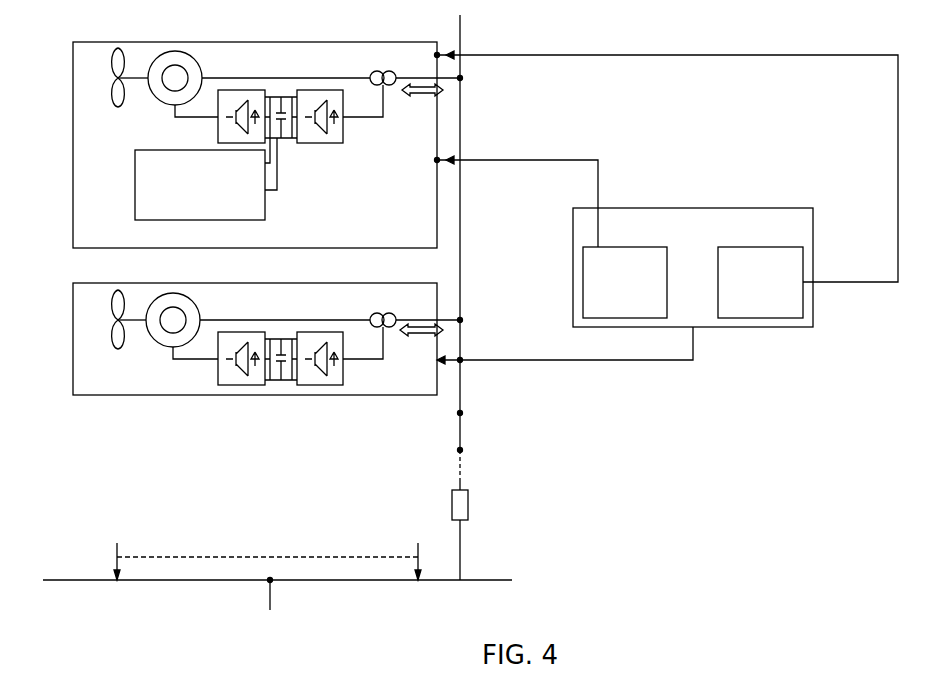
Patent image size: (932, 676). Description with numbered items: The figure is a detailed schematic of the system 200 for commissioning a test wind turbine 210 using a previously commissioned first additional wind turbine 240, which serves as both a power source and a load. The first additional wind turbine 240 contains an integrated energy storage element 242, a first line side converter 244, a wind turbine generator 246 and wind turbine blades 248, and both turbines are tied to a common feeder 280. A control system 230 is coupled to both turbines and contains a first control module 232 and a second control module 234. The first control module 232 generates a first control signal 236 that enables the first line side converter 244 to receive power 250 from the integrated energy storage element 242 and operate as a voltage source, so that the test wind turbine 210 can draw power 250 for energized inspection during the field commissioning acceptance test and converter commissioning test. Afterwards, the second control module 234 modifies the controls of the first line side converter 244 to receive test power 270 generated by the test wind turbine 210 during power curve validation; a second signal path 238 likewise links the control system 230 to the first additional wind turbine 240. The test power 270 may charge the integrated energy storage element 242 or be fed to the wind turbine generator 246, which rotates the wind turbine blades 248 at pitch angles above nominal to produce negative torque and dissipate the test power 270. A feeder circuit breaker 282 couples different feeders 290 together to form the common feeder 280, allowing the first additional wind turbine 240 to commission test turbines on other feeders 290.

The system 200 is at (808, 581).
The test wind turbine 210 is at (73, 348).
The control system 230 is at (698, 263).
The first control module 232 is at (583, 272).
The second control module 234 is at (804, 259).
The first control signal 236 is at (576, 159).
The control line to second wind turbine 238 is at (690, 54).
The first additional wind turbine 240 is at (237, 125).
The integrated energy storage element 242 is at (259, 221).
The first line side converter 244 is at (330, 144).
The wind turbine generator 246 is at (175, 50).
The wind turbine blades 248 is at (119, 47).
The power 250 is at (384, 96).
The test power 270 is at (445, 95).
The common feeder 280 is at (462, 30).
The feeder circuit breaker 282 is at (468, 505).
The feeders 290 is at (117, 546).